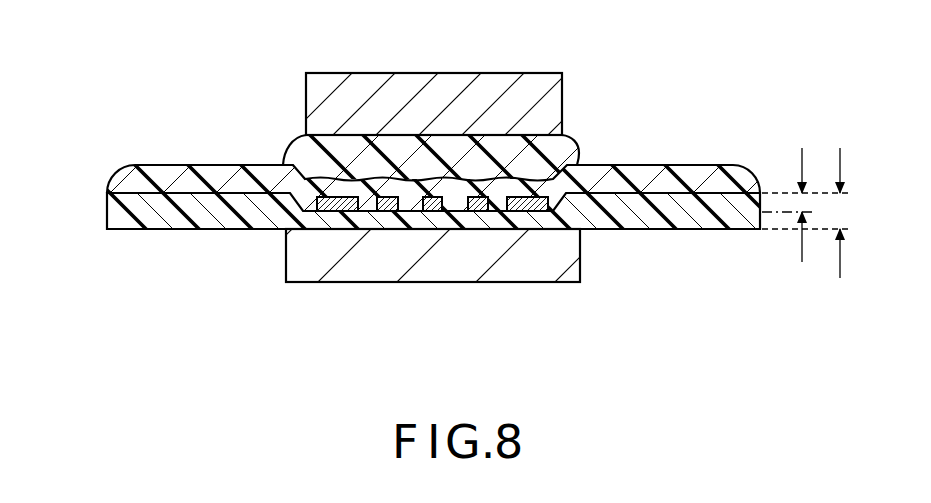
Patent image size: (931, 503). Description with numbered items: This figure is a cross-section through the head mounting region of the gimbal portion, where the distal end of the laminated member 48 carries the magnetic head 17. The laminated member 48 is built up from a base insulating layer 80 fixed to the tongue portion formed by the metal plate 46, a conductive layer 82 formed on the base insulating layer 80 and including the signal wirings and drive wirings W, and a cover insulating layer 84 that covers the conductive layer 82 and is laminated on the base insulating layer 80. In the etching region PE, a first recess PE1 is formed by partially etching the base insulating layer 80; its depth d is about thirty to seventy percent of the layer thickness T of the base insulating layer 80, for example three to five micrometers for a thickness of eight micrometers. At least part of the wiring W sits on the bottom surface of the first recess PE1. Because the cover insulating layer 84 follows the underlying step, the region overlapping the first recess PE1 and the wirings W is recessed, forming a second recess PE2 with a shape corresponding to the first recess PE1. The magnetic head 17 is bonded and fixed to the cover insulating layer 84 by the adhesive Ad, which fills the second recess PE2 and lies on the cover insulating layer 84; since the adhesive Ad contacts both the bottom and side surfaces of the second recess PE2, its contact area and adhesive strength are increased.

The magnetic head 17 is at (332, 85).
The metal plate 46 is at (549, 273).
The laminated member 48 is at (718, 165).
The base insulating layer 80 is at (113, 219).
The conductive layer 82 is at (428, 287).
The cover insulating layer 84 is at (182, 170).
The wiring W is at (384, 210).
The etching region PE is at (435, 133).
The first recess PE1 is at (413, 210).
The second recess PE2 is at (327, 172).
The adhesive Ad is at (573, 159).
The depth of the recess d is at (806, 207).
The layer thickness of the base insulating layer T is at (806, 213).